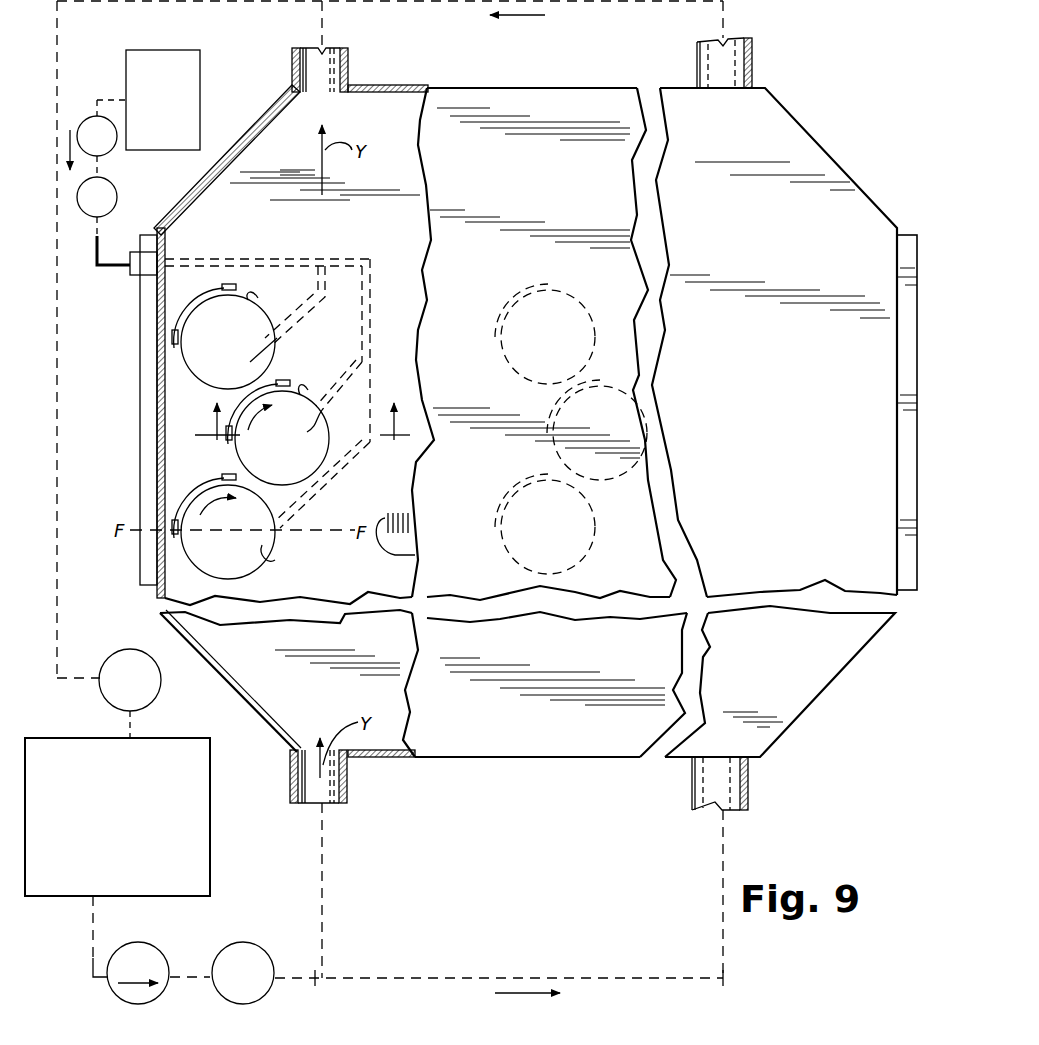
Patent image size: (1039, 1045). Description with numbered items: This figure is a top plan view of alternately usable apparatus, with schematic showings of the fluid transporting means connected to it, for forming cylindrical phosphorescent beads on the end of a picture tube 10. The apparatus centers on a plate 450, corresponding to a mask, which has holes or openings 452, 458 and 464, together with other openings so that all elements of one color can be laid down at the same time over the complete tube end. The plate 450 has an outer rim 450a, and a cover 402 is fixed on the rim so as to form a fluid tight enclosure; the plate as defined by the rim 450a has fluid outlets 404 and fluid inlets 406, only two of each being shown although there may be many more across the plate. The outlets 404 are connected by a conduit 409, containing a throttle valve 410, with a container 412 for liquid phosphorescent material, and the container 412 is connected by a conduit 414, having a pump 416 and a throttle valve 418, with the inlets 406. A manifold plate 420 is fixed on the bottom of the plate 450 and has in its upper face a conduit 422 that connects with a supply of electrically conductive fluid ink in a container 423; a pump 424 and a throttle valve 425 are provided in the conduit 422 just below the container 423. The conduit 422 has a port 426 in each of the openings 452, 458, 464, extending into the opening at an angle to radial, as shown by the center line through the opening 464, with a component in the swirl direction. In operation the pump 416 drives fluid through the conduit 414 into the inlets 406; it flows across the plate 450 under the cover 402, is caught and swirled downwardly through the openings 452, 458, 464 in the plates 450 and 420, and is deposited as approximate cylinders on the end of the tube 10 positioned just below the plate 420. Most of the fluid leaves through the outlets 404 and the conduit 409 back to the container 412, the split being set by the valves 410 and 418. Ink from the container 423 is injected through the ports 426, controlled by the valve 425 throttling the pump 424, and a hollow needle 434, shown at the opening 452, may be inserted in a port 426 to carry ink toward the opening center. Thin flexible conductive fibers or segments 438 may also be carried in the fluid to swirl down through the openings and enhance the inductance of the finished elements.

The picture tube 10 is at (302, 437).
The cover 402 is at (545, 105).
The fluid outlets 404 is at (352, 70).
The fluid inlets 406 is at (347, 785).
The conduit 409 is at (57, 530).
The throttle valve 410 is at (110, 700).
The container 412 is at (197, 838).
The conduit 414 is at (94, 925).
The pump 416 is at (120, 1003).
The throttle valve 418 is at (258, 1003).
The manifold plate 420 is at (140, 497).
The conduit 422 is at (365, 258).
The container 423 is at (175, 50).
The pump 424 is at (110, 150).
The throttle valve 425 is at (113, 190).
The port 426 is at (282, 438).
The needle 434 is at (258, 358).
The fibers or segments 438 is at (415, 555).
The plate 450 is at (263, 677).
The outer rim 450a is at (157, 460).
The opening 452 is at (248, 296).
The opening 458 is at (300, 392).
The opening 464 is at (270, 550).